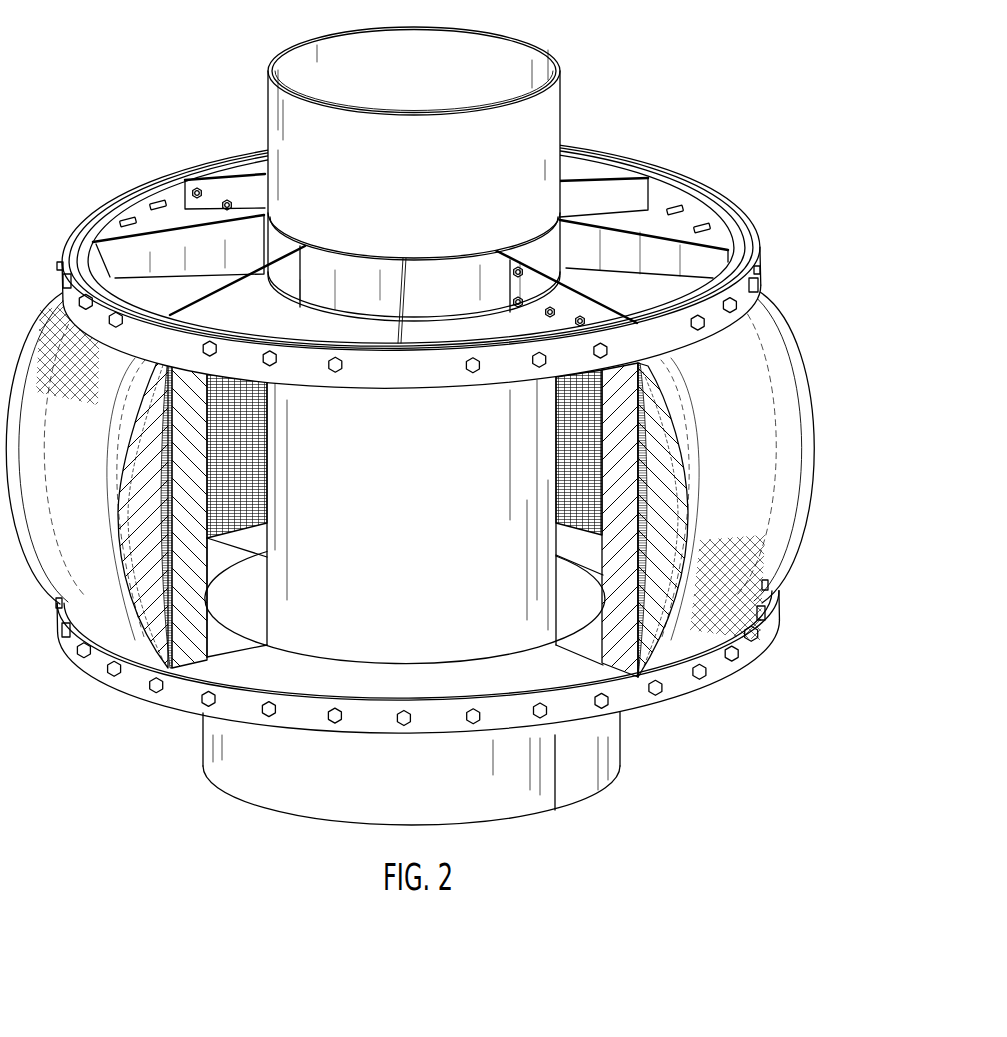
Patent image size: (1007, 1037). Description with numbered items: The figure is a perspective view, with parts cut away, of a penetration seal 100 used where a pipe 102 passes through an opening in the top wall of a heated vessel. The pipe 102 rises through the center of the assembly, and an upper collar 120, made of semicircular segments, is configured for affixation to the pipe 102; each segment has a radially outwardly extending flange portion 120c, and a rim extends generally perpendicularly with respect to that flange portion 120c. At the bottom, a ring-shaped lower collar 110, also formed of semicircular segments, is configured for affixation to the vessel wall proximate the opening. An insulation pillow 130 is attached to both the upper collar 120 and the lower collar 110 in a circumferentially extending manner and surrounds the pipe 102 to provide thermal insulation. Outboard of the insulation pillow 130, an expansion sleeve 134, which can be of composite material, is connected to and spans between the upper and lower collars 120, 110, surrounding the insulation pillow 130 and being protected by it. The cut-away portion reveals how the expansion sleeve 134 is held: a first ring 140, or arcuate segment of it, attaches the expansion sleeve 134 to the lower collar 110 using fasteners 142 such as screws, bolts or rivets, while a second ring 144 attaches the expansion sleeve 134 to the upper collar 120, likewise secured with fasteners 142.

The penetration seal 100 is at (448, 414).
The pipe 102 is at (546, 100).
The lower collar 110 is at (180, 754).
The upper collar 120 is at (473, 242).
The flange portion 120c is at (673, 294).
The insulation pillow 130 is at (615, 623).
The expansion sleeve 134 is at (772, 512).
The first ring 140 is at (667, 678).
The fasteners 142 is at (760, 278).
The second ring 144 is at (743, 297).